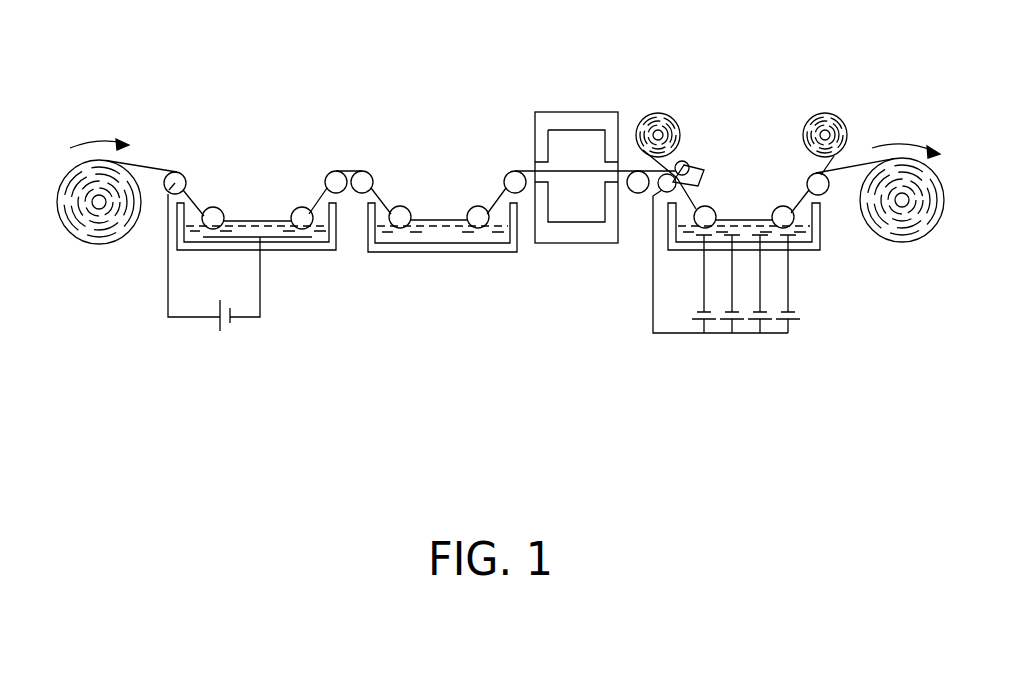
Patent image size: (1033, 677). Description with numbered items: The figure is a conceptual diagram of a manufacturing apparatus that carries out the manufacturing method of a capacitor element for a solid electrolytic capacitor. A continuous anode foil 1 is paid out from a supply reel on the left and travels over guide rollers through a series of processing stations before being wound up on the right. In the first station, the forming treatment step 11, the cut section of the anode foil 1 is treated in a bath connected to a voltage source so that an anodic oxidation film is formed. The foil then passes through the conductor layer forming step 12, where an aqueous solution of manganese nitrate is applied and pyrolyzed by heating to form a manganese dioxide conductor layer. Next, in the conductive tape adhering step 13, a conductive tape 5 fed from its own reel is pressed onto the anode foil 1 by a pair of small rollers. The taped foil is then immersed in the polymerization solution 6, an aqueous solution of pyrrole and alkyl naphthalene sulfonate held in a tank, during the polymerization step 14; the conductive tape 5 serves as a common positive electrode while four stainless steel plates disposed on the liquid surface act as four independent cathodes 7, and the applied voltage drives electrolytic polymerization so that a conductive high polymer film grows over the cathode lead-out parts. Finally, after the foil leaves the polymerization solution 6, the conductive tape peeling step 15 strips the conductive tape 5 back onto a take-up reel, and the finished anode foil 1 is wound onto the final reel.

The anode foil 1 is at (152, 167).
The conductive tape 5 is at (657, 112).
The polymerization solution 6 is at (802, 237).
The cathodes 7 is at (737, 217).
The forming treatment step 11 is at (343, 407).
The conductor layer forming step 12 is at (370, 407).
The conductive tape adhering step 13 is at (685, 160).
The polymerization step 14 is at (737, 257).
The conductive tape peeling step 15 is at (808, 173).